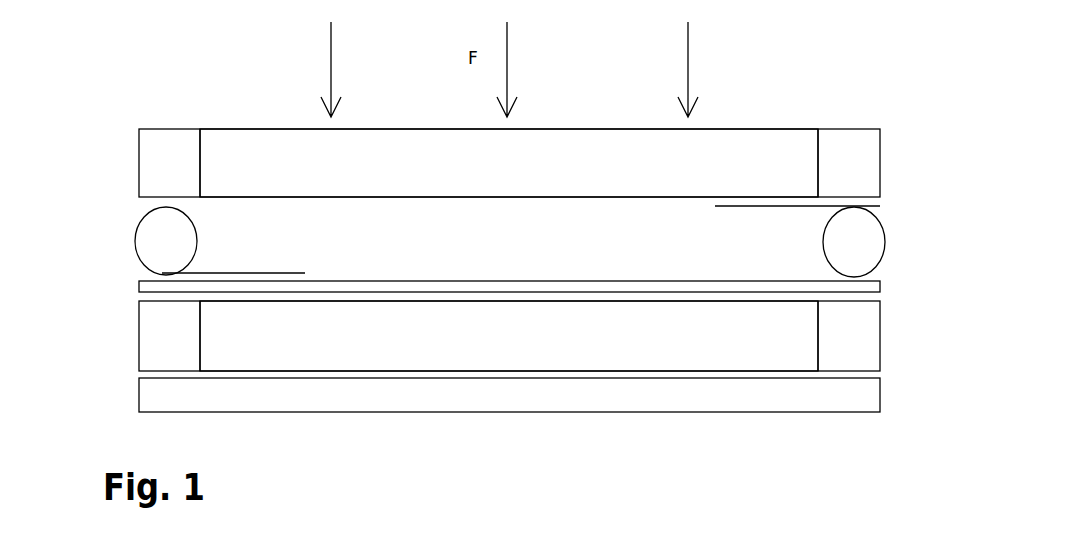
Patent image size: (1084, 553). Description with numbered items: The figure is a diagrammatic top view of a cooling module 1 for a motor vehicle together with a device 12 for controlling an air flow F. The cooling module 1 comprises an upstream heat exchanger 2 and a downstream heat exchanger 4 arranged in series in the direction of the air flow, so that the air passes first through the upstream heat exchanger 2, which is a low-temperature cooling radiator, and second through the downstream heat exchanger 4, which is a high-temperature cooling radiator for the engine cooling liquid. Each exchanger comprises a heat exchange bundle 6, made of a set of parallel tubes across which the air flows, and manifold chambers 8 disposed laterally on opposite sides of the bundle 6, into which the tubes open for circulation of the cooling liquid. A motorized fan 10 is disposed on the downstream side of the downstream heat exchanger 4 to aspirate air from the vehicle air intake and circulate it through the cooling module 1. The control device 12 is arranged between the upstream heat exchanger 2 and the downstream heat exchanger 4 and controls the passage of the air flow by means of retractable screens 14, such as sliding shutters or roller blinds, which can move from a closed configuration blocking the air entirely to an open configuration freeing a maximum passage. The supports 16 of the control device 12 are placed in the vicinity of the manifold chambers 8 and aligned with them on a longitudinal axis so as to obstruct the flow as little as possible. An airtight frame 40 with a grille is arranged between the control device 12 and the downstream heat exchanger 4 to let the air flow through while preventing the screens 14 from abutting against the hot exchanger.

The cooling module 1 is at (884, 110).
The upstream heat exchanger 2 is at (880, 163).
The downstream heat exchanger 4 is at (880, 343).
The heat exchange bundle 6 is at (243, 155).
The manifold chamber 8 is at (172, 163).
The motorized fan 10 is at (172, 394).
The device for controlling the air flow 12 is at (128, 238).
The retractable screen 14 is at (778, 206).
The support 16 is at (846, 237).
The airtight frame 40 is at (870, 285).